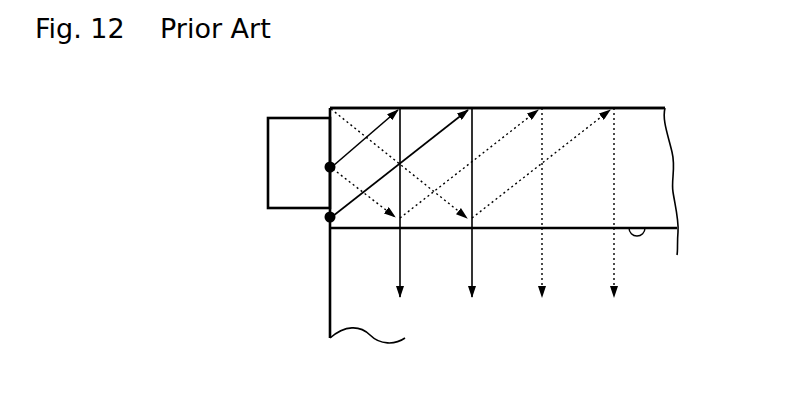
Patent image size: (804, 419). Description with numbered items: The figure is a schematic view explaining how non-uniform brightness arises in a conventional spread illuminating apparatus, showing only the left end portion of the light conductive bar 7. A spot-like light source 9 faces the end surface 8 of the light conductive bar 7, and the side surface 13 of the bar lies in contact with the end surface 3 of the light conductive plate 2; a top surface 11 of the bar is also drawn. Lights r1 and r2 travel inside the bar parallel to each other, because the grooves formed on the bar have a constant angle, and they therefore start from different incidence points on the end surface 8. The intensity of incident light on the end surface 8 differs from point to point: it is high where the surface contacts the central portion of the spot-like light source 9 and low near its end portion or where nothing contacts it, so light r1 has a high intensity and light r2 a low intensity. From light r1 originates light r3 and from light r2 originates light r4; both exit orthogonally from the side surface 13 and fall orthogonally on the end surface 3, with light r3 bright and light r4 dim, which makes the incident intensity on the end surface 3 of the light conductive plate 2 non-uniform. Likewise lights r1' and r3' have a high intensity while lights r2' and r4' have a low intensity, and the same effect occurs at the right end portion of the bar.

The light conductive plate 2 is at (352, 313).
The end surface of the light conductive plate 3 is at (658, 227).
The light conductive bar 7 is at (640, 132).
The end surface of the light conductive bar 8 is at (330, 110).
The spot-like light source 9 is at (268, 163).
The top (light emitting) surface 11 is at (500, 108).
The side surface of the light conductive bar 13 is at (629, 228).
The light r1 is at (370, 100).
The light r2 is at (400, 125).
The light r1' is at (325, 227).
The light r2' is at (464, 126).
The light r3 is at (402, 313).
The light r4 is at (469, 313).
The light r3' is at (542, 314).
The light r4' is at (618, 314).